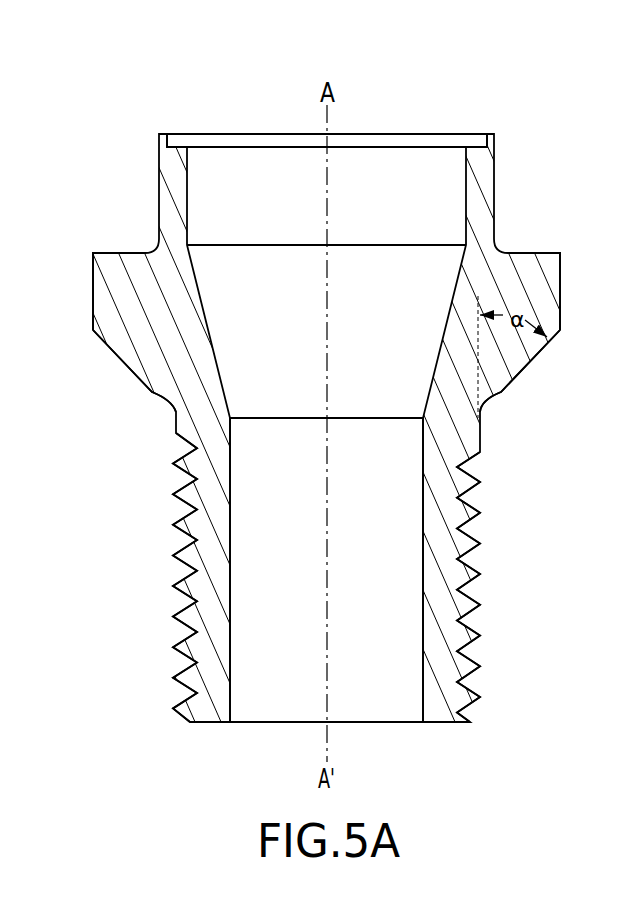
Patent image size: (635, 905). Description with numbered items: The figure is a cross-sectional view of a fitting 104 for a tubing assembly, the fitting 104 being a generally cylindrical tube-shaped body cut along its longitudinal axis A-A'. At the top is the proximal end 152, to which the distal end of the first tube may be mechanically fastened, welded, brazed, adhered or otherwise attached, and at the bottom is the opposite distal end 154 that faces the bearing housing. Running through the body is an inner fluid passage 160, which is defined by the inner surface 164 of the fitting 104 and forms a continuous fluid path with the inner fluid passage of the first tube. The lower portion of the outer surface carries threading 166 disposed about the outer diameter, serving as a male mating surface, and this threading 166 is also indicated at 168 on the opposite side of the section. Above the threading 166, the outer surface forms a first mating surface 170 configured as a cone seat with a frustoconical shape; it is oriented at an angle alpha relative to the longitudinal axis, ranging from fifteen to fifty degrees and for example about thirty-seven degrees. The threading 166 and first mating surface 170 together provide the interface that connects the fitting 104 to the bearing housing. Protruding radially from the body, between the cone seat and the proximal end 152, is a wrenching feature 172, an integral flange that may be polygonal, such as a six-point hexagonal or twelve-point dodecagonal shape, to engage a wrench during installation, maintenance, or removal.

The fitting 104 is at (110, 193).
The proximal end 152 is at (158, 103).
The distal end 154 is at (252, 743).
The inner fluid passage 160 is at (368, 550).
The inner surface 164 is at (294, 640).
The threading 166 is at (476, 658).
The threads 168 is at (160, 673).
The first mating surface 170 is at (125, 368).
The wrenching feature 172 is at (542, 302).